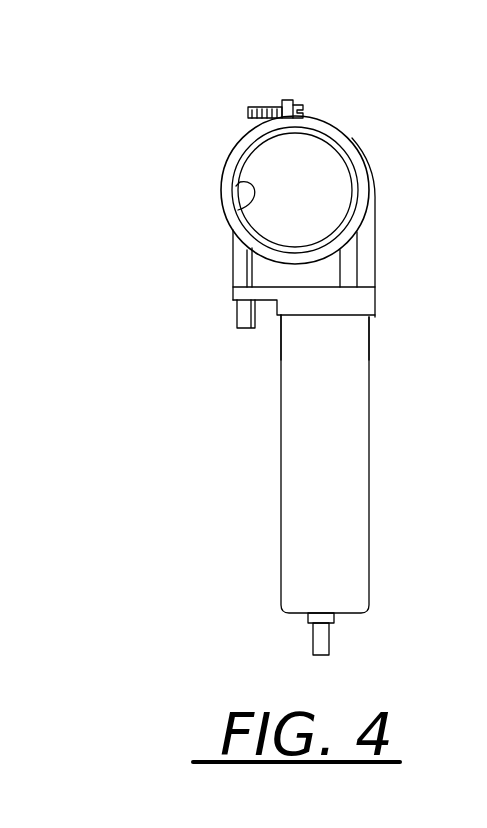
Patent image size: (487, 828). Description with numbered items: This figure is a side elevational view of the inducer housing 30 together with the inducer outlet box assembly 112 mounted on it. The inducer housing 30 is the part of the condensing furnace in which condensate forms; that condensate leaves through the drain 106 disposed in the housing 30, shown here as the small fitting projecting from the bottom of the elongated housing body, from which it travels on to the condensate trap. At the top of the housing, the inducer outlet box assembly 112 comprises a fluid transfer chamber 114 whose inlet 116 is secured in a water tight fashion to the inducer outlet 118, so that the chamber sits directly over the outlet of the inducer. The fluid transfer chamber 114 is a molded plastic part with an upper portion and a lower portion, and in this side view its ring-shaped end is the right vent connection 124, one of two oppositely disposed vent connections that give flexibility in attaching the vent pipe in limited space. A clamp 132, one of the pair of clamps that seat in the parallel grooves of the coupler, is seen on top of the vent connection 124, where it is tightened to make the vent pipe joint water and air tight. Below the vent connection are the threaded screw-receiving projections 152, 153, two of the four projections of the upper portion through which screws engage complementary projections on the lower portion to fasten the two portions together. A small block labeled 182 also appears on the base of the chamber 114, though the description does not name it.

The inducer housing 30 is at (280, 446).
The drain 106 is at (313, 636).
The inducer outlet box assembly 112 is at (192, 162).
The fluid transfer chamber 114 is at (392, 230).
The inlet 116 is at (375, 306).
The inducer outlet 118 is at (345, 331).
The right vent connection 124 is at (238, 210).
The clamp 132 is at (288, 100).
The threaded screw-receiving projection 152 is at (243, 268).
The threaded screw-receiving projection 153 is at (348, 267).
The projection block 182 is at (237, 311).